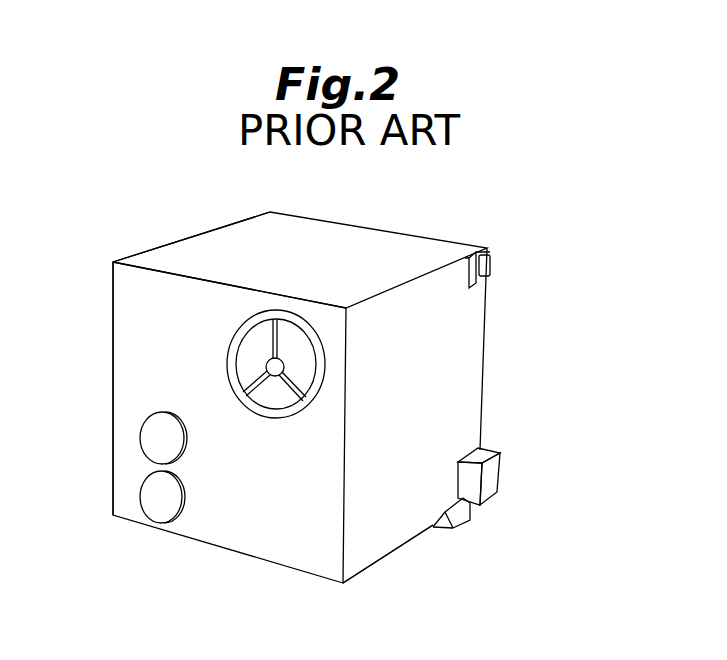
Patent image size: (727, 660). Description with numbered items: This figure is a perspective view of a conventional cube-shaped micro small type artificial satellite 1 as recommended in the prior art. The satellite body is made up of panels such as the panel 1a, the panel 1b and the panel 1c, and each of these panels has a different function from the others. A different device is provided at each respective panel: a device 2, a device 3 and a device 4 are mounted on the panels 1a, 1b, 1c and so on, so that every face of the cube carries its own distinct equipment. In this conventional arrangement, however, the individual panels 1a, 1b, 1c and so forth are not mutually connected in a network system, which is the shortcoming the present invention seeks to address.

The artificial satellite 1 is at (530, 250).
The panel 1a is at (198, 242).
The panel 1b is at (130, 492).
The panel 1c is at (403, 543).
The device 2 is at (162, 512).
The device 3 is at (277, 397).
The device 4 is at (497, 472).